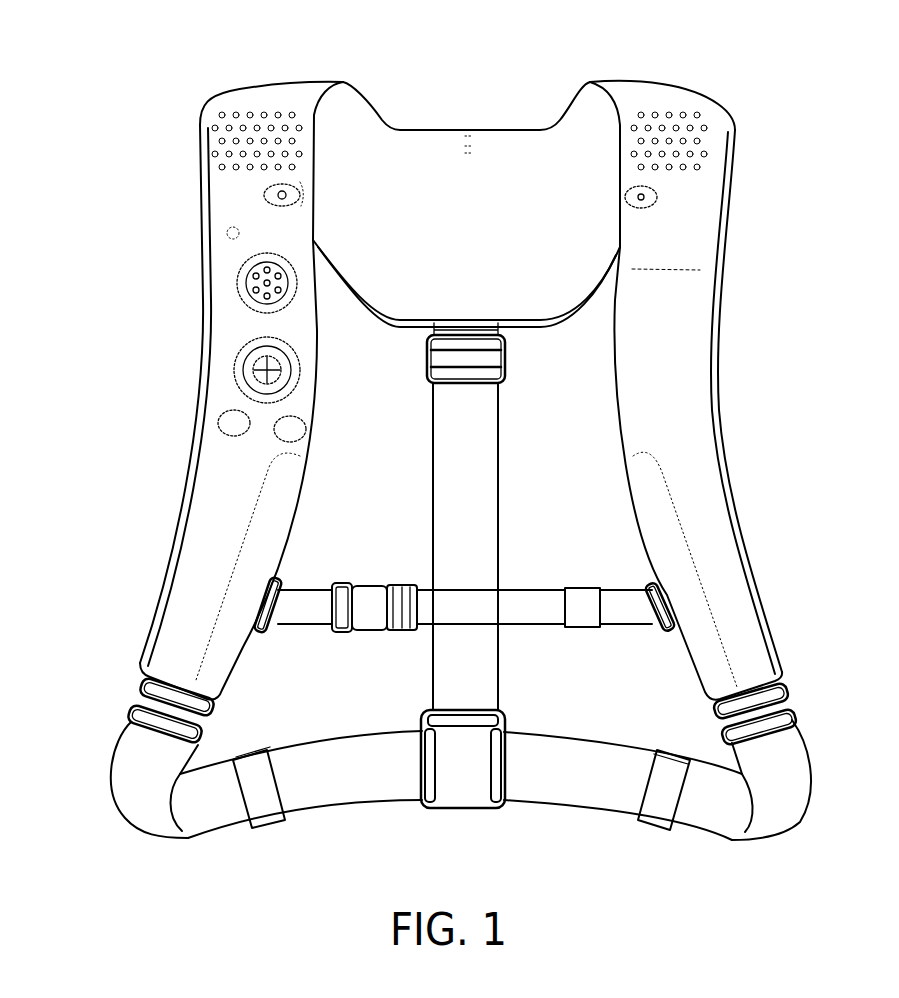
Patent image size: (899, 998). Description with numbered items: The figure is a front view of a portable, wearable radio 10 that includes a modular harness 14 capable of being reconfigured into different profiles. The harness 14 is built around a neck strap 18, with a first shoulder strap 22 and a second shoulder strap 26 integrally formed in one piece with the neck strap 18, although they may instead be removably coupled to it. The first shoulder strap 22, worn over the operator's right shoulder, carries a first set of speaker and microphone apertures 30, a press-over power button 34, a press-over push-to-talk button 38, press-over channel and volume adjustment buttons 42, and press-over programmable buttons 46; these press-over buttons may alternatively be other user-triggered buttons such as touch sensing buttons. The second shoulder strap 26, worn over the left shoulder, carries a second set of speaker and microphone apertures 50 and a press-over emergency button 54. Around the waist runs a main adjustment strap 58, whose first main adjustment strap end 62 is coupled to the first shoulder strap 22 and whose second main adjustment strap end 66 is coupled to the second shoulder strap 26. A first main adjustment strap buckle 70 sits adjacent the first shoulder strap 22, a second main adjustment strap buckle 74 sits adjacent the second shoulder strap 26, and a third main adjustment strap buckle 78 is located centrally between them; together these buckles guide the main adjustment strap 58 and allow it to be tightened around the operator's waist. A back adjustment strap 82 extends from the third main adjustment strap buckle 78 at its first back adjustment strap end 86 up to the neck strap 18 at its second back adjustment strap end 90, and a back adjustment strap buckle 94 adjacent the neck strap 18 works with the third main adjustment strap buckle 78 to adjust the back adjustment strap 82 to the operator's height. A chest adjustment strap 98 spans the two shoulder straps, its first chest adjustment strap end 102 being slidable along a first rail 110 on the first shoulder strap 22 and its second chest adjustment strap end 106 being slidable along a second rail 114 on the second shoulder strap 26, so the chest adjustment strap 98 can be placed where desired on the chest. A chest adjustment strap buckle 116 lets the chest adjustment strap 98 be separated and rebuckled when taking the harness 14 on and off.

The portable, wearable radio 10 is at (116, 82).
The harness 14 is at (691, 85).
The neck strap 18 is at (409, 146).
The first shoulder strap 22 is at (208, 198).
The second shoulder strap 26 is at (709, 233).
The first set of speaker and microphone apertures 30 is at (280, 125).
The press-over power button 34 is at (277, 192).
The press-over push-to-talk button 38 is at (255, 275).
The press-over channel and volume adjustment buttons 42 is at (257, 363).
The press-over programmable buttons 46 is at (283, 428).
The second set of speaker and microphone apertures 50 is at (697, 160).
The press-over emergency button 54 is at (653, 193).
The main adjustment strap 58 is at (341, 801).
The first main adjustment strap end 62 is at (145, 741).
The second main adjustment strap end 66 is at (782, 747).
The first main adjustment strap buckle 70 is at (150, 697).
The second main adjustment strap buckle 74 is at (770, 703).
The third main adjustment strap buckle 78 is at (468, 787).
The back adjustment strap 82 is at (494, 496).
The first back adjustment strap end 86 is at (492, 695).
The second back adjustment strap end 90 is at (490, 402).
The back adjustment strap buckle 94 is at (505, 358).
The chest adjustment strap 98 is at (526, 591).
The first chest adjustment strap end 102 is at (282, 597).
The second chest adjustment strap end 106 is at (650, 593).
The first rail 110 is at (272, 557).
The second rail 114 is at (653, 548).
The chest adjustment strap buckle 116 is at (367, 588).